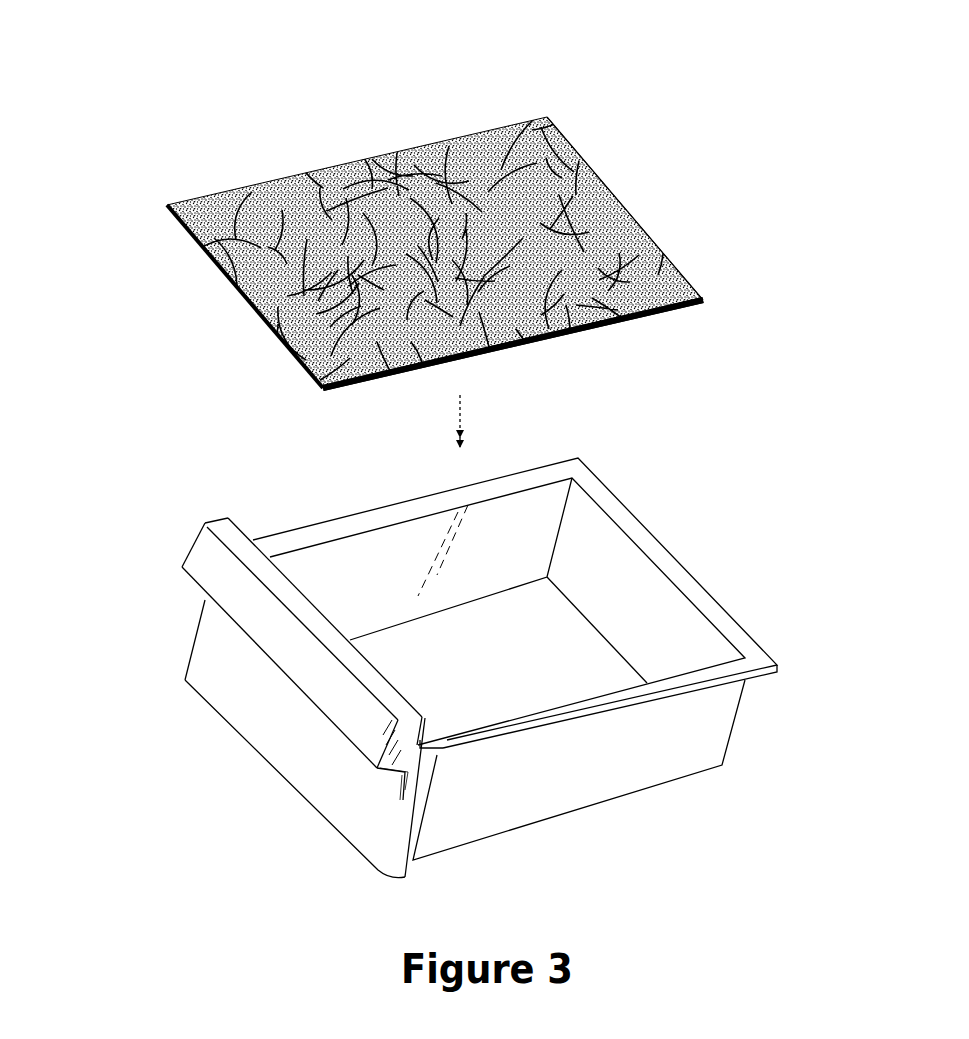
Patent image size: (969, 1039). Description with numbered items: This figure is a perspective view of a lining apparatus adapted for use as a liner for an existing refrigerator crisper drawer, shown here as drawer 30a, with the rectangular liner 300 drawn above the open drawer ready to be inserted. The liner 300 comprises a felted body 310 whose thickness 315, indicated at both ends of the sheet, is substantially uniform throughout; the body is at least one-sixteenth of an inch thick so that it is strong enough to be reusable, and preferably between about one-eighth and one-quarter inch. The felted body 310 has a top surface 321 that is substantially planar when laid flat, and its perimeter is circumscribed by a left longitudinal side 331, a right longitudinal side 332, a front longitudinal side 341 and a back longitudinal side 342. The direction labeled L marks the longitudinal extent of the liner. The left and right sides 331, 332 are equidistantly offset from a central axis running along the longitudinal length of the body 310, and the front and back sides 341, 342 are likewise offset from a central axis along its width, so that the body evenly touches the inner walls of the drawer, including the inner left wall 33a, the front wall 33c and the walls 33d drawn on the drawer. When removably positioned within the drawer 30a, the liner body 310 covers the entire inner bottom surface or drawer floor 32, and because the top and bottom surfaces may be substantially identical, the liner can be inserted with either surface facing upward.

The rectangular liner 300 is at (208, 167).
The length direction L is at (498, 14).
The felted body 310 is at (292, 186).
The left longitudinal side 331 is at (410, 146).
The top surface 321 is at (558, 196).
The back longitudinal side 342 is at (642, 220).
The front longitudinal side 341 is at (241, 302).
The right longitudinal side 332 is at (574, 334).
The thickness 315 is at (150, 200).
The drawer 30a is at (467, 645).
The front wall of drawer 33c is at (372, 640).
The inner left wall 33a is at (378, 546).
The rear wall of drawer 33d is at (598, 548).
The drawer floor 32 is at (568, 651).